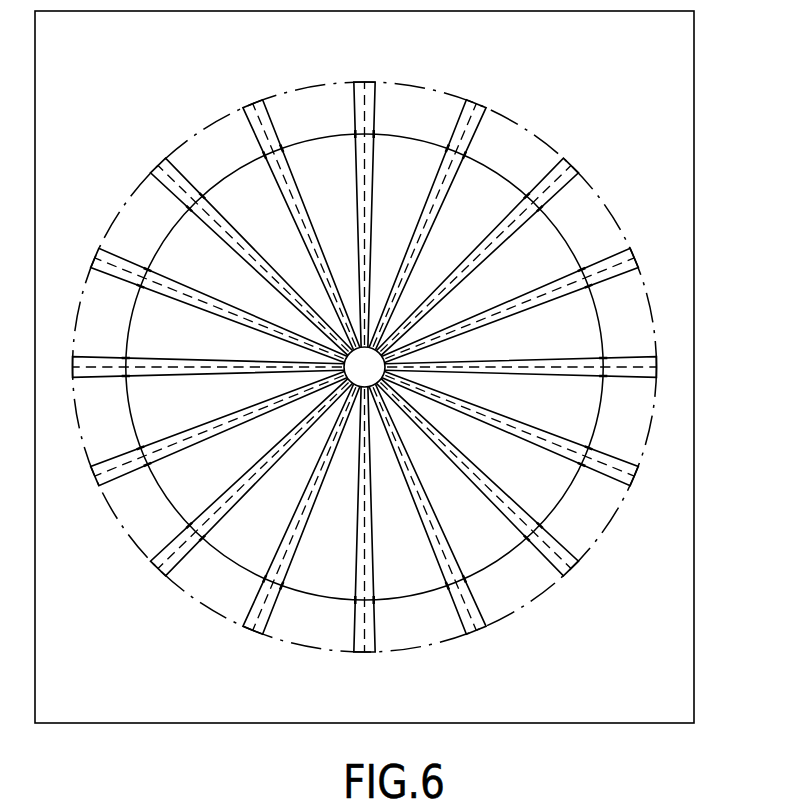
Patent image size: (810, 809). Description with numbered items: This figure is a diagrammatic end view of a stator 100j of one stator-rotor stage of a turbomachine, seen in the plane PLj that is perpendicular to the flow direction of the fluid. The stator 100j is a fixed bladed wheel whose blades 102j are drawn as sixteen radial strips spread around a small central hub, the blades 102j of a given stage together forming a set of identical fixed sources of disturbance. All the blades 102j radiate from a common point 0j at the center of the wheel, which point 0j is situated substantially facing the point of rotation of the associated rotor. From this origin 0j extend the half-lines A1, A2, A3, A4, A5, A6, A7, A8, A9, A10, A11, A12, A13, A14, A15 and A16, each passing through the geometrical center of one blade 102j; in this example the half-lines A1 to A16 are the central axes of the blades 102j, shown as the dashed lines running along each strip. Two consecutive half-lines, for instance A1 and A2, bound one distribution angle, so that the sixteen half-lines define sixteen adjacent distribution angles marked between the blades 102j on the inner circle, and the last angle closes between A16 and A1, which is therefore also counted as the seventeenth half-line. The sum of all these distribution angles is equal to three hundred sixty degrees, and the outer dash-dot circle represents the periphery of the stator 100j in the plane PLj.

The plane PLj is at (118, 11).
The stator 100j is at (658, 399).
The stator blade 102j is at (354, 110).
The common point 0j is at (366, 366).
The half-line A1 is at (366, 99).
The half-line A2 is at (483, 117).
The half-line A3 is at (562, 165).
The half-line A4 is at (619, 264).
The half-line A5 is at (624, 358).
The half-line A6 is at (616, 476).
The half-line A7 is at (558, 554).
The half-line A8 is at (472, 607).
The half-line A9 is at (368, 630).
The half-line A10 is at (258, 620).
The half-line A11 is at (166, 562).
The half-line A12 is at (116, 482).
The half-line A13 is at (88, 374).
The half-line A14 is at (100, 276).
The half-line A15 is at (165, 186).
The half-line A16 is at (250, 128).